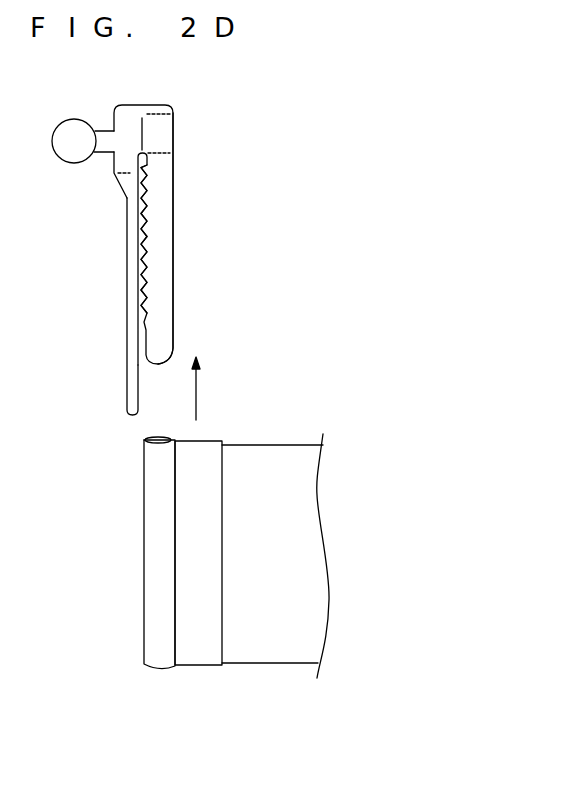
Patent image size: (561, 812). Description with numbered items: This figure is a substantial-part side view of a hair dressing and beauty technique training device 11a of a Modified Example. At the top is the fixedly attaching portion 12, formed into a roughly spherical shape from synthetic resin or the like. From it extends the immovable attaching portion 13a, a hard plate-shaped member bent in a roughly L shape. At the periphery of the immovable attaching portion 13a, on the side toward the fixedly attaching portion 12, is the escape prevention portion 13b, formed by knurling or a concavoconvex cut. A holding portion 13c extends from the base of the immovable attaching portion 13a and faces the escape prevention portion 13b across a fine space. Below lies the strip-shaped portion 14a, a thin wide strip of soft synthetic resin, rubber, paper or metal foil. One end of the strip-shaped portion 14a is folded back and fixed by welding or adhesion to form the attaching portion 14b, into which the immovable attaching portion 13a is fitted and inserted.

The hair dressing and beauty technique training device 11a is at (295, 122).
The fixedly attaching portion 12 is at (72, 164).
The immovable attaching portion 13a is at (165, 288).
The escape prevention portion 13b is at (140, 290).
The holding portion 13c is at (130, 342).
The strip-shaped portion 14a is at (260, 465).
The attaching portion 14b is at (153, 498).